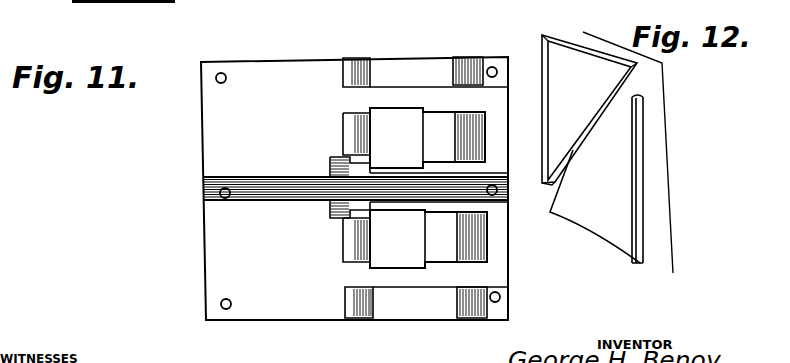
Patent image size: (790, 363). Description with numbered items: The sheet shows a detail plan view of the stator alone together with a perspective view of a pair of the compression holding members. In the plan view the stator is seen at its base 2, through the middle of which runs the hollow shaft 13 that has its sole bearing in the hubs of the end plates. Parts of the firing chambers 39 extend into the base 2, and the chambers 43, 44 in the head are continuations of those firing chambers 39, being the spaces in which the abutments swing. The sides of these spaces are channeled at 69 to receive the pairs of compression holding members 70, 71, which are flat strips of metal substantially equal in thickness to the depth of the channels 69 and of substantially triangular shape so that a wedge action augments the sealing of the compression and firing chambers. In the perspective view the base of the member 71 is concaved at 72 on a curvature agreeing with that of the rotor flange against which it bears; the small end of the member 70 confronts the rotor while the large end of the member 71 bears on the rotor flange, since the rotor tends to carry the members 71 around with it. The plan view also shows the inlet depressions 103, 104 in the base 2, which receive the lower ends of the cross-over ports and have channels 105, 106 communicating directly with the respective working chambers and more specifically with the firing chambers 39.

In FIG. 11, the base 2 is at (208, 269).
In FIG. 11, the hollow shaft 13 is at (237, 205).
In FIG. 11, the firing chamber 39 is at (437, 131).
In FIG. 11, the chamber 43 is at (447, 262).
In FIG. 11, the chamber 44 is at (433, 112).
In FIG. 11, the channel 69 is at (385, 107).
In FIG. 12, the compression holding member 70 is at (546, 58).
In FIG. 12, the compression holding member 71 is at (627, 192).
In FIG. 12, the concaved base 72 is at (594, 233).
In FIG. 11, the inlet depression 103 is at (330, 166).
In FIG. 11, the inlet depression 104 is at (331, 212).
In FIG. 11, the channel 105 is at (372, 155).
In FIG. 11, the channel 106 is at (363, 221).